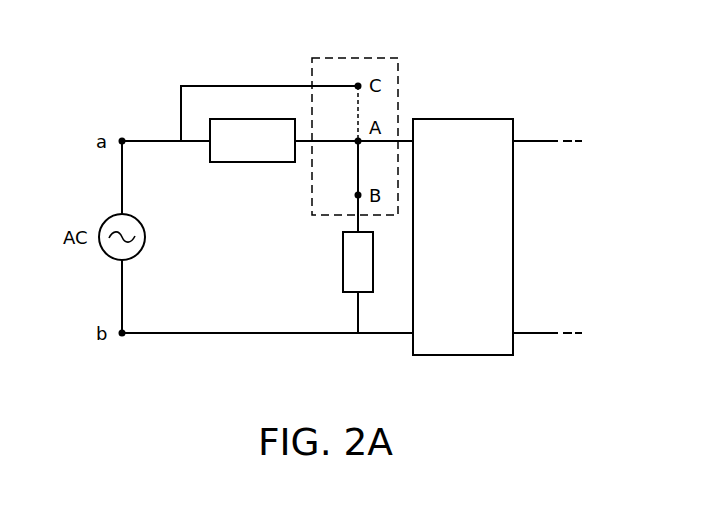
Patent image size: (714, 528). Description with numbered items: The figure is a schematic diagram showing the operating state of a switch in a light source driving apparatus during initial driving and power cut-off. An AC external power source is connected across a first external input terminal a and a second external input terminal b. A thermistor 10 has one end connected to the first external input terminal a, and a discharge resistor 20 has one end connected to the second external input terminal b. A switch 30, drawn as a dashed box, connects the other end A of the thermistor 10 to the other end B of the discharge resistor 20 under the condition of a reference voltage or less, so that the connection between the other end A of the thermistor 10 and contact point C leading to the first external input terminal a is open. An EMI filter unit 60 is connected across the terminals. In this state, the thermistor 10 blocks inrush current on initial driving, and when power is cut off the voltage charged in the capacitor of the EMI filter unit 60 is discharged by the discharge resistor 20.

The thermistor 10 is at (250, 162).
The discharge resistor 20 is at (343, 262).
The switch 30 is at (370, 58).
The electromagnetic interference (EMI) filter unit 60 is at (482, 119).